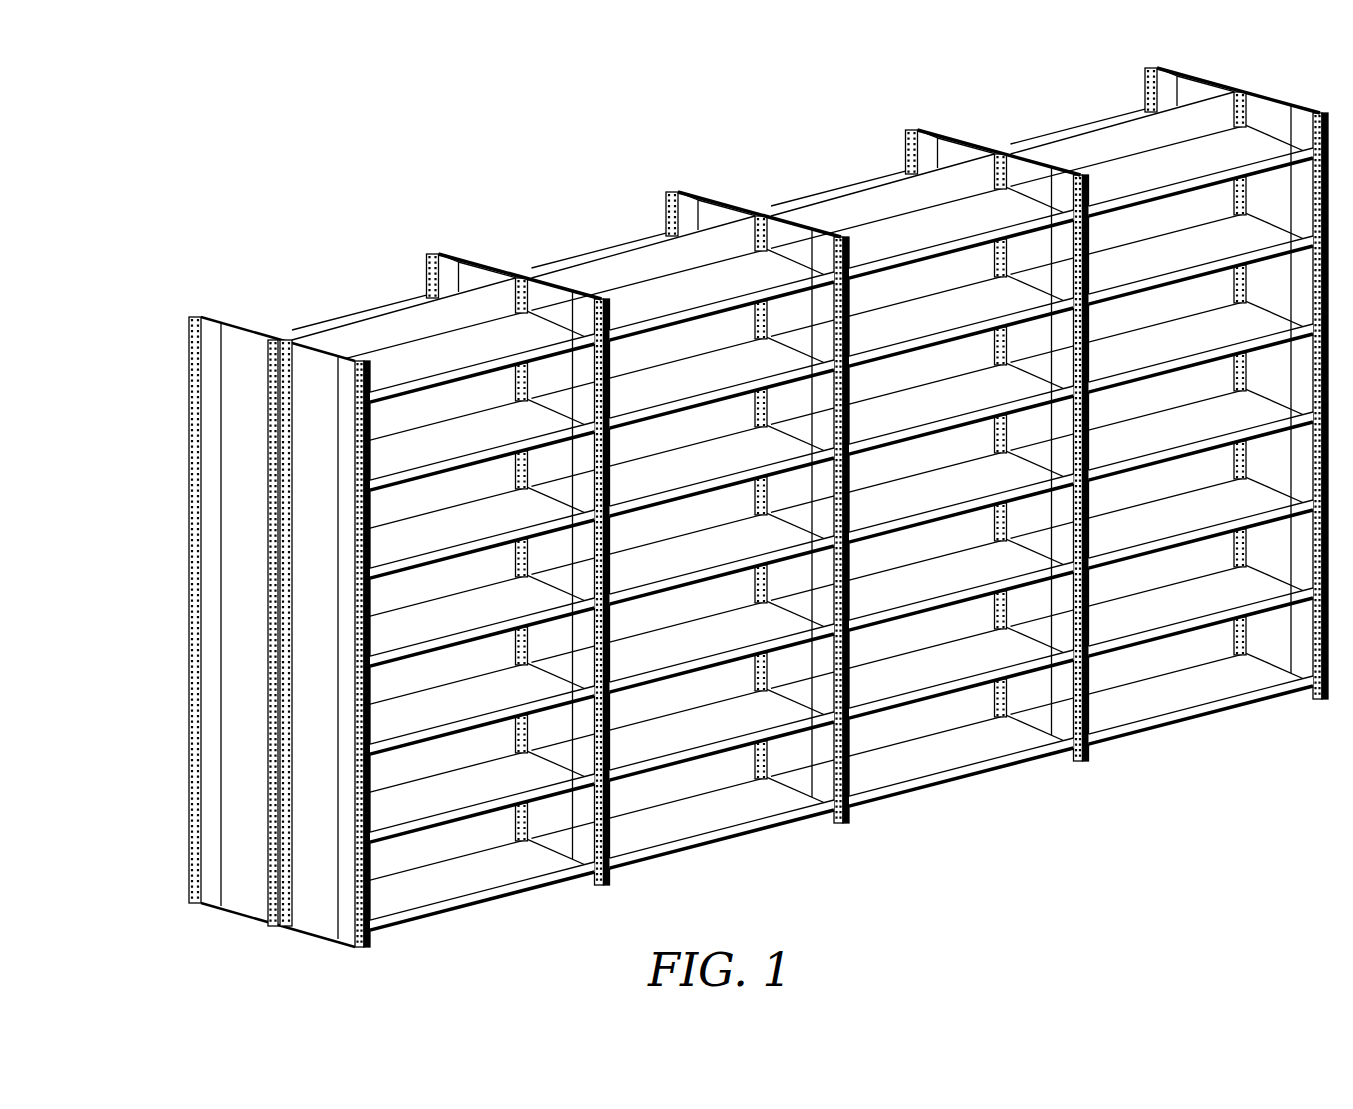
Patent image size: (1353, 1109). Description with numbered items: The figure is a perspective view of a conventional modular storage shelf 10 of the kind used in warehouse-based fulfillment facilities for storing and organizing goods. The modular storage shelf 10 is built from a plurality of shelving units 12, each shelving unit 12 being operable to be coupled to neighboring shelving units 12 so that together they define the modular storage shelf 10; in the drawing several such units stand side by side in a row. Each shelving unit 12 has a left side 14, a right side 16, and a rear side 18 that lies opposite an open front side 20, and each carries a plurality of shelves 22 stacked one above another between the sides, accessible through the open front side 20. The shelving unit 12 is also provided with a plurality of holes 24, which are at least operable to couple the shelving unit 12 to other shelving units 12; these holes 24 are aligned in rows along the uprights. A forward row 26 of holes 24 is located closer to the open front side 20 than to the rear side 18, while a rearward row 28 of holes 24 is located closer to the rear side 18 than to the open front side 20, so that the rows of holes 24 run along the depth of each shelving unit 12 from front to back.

The modular storage shelf 10 is at (150, 187).
The shelving unit 12 is at (703, 507).
The left side 14 is at (800, 183).
The right side 16 is at (556, 308).
The rear side 18 is at (274, 338).
The open front side 20 is at (467, 318).
The shelves 22 is at (435, 397).
The holes 24 is at (703, 519).
The forward row 26 is at (192, 427).
The rearward row 28 is at (287, 338).